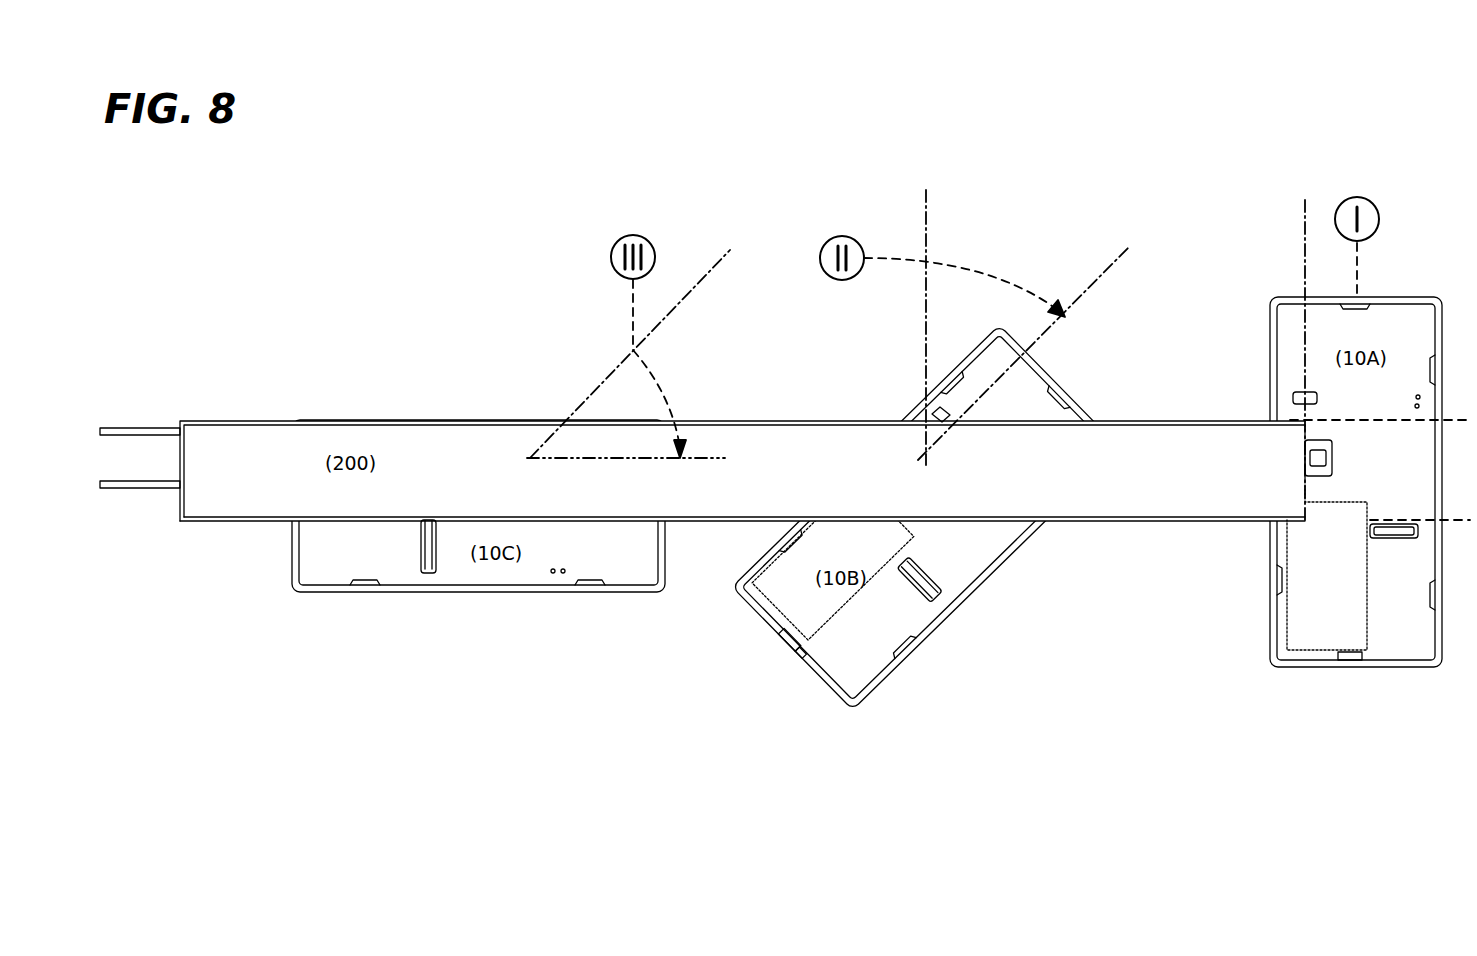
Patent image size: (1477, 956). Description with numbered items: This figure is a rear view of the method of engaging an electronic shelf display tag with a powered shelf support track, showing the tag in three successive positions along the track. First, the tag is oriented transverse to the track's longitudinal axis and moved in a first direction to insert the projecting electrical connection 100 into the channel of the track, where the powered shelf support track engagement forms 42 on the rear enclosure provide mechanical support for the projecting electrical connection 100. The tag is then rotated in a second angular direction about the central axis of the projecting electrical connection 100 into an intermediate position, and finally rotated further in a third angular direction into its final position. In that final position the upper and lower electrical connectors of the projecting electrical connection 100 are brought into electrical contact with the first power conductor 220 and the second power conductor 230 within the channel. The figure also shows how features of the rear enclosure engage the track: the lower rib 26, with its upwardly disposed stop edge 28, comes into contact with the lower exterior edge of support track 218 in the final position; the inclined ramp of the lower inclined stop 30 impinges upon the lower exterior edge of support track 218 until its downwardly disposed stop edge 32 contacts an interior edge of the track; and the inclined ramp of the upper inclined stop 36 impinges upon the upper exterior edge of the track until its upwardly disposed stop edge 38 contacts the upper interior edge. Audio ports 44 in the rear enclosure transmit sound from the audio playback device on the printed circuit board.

The first power conductor 220 is at (130, 434).
The second power conductor 230 is at (130, 488).
The lower exterior edge of support track 218 is at (345, 522).
The upwardly disposed stop edge 28 is at (430, 524).
The lower rib 26 is at (435, 574).
The audio ports 44 is at (553, 578).
The upwardly disposed stop edge 38 is at (936, 416).
The lower inclined stop 30 is at (792, 634).
The downwardly disposed stop edge 32 is at (805, 650).
The upper inclined stop 36 is at (1299, 392).
The powered shelf support track engagement forms 42 is at (1312, 472).
The projecting electrical connection 100 is at (1331, 462).